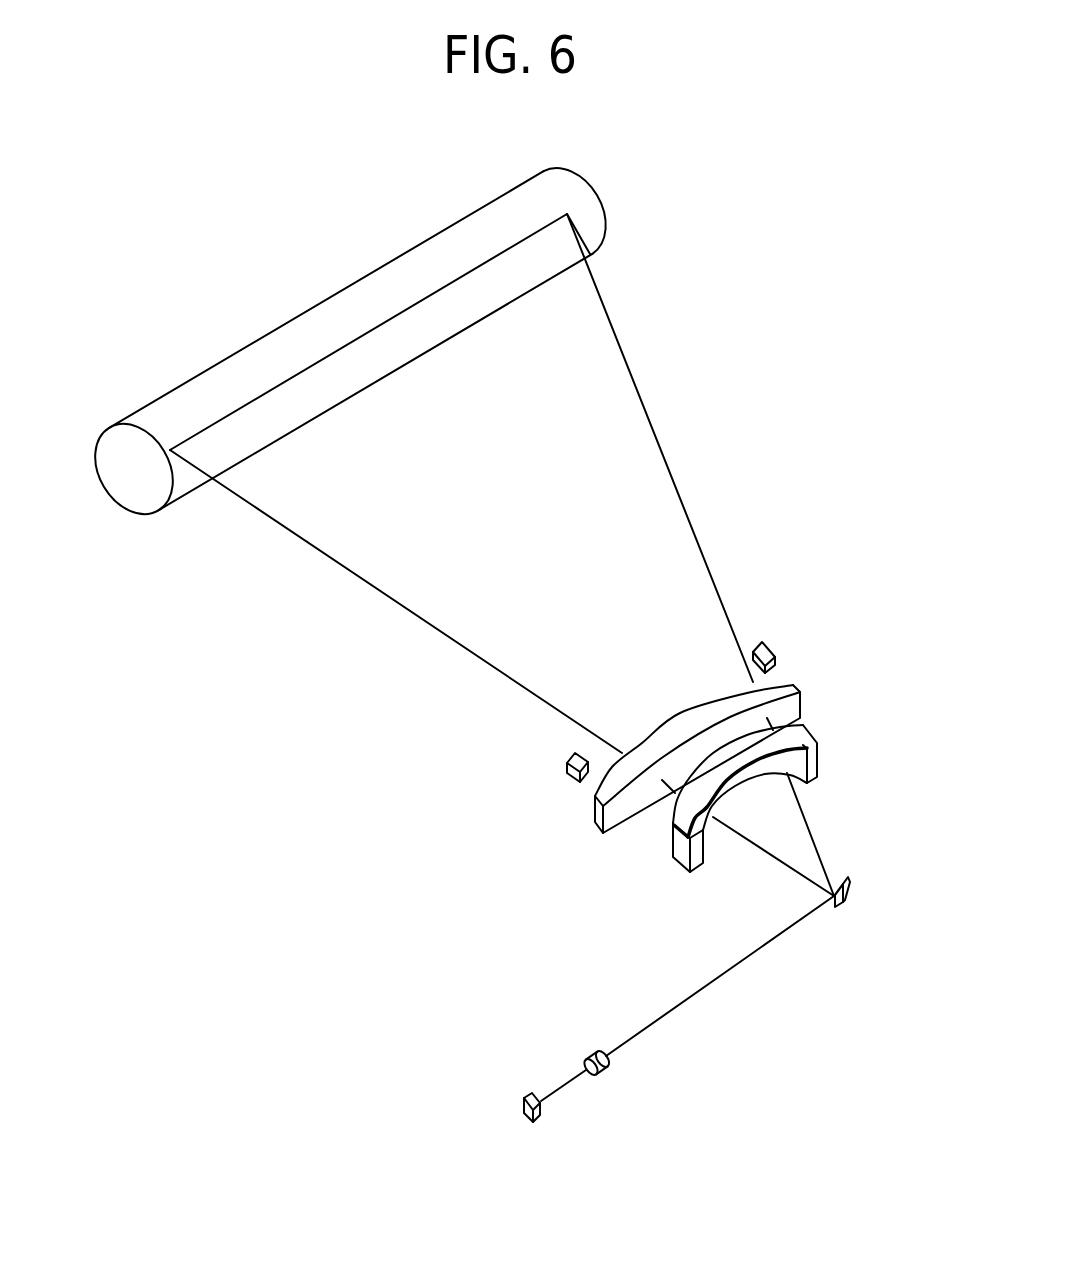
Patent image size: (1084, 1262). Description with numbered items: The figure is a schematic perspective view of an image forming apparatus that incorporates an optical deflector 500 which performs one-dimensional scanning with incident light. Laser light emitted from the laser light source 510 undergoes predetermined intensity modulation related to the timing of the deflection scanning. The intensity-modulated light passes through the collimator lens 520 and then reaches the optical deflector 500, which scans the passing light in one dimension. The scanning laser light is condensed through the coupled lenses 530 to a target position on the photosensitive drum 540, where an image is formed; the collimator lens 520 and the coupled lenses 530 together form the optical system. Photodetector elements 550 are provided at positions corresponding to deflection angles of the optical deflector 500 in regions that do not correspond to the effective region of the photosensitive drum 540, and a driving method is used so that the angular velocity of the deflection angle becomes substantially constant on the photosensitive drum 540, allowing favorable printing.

The optical deflector 500 is at (848, 877).
The laser light source 510 is at (537, 1120).
The collimator lens 520 is at (607, 1072).
The coupled lenses 530 is at (817, 665).
The photosensitive drum 540 is at (608, 224).
The photodetector elements 550 is at (563, 757).